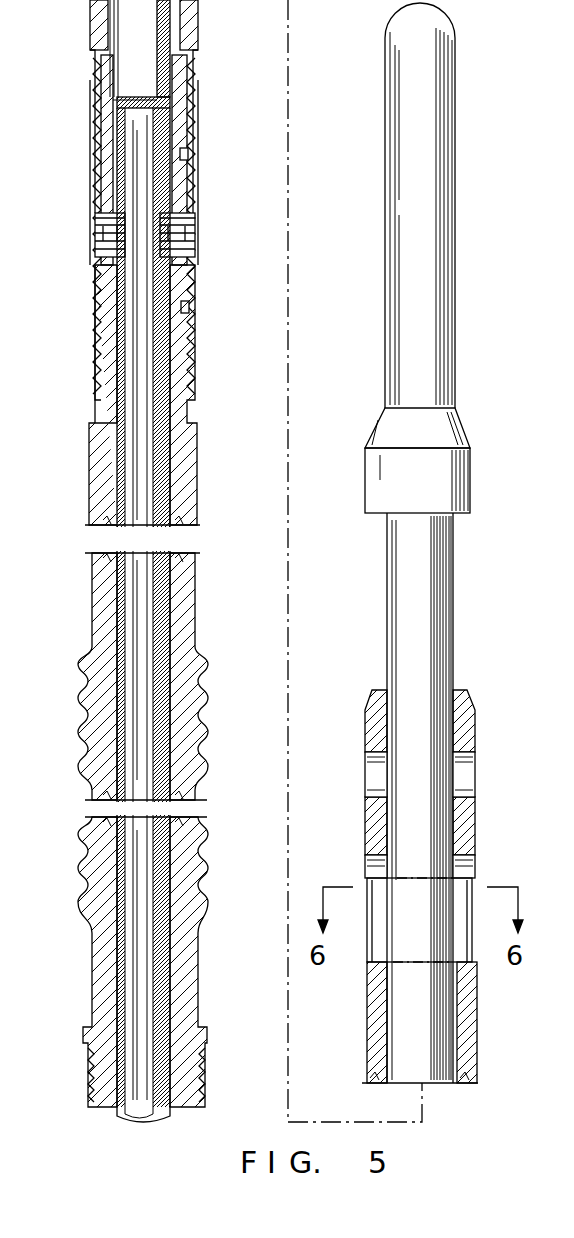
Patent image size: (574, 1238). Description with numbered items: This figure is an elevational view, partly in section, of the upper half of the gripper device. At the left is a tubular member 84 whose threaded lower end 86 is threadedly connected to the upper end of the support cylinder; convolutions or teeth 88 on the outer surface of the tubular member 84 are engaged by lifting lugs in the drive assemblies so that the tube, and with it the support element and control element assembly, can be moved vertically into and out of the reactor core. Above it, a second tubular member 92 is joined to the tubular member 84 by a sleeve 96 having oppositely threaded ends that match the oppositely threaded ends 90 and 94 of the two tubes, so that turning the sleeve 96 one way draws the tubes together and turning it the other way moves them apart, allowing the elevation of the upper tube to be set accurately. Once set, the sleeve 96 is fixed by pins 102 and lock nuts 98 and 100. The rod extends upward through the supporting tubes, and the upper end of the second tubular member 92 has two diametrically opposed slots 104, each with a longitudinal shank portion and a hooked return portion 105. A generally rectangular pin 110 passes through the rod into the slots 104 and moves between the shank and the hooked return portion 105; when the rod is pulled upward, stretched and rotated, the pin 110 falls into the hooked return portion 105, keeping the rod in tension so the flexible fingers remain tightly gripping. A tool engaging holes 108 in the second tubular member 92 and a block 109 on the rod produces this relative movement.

The tubular member 84 is at (183, 629).
The threaded lower end 86 is at (195, 1066).
The convolutions or teeth 88 is at (217, 838).
The threaded end 90 is at (96, 312).
The second tubular member 92 is at (198, 24).
The threaded end 94 is at (93, 190).
The sleeve 96 is at (188, 262).
The lock nut 98 is at (196, 113).
The lock nut 100 is at (190, 385).
The pin 102 is at (189, 156).
The slot 104 is at (472, 862).
The hooked return portion 105 is at (472, 962).
The hole 108 is at (465, 776).
The block 109 is at (453, 478).
The pin 110 is at (462, 888).